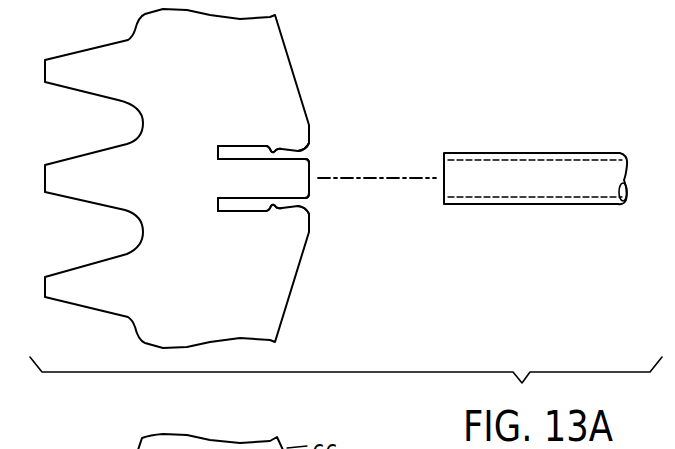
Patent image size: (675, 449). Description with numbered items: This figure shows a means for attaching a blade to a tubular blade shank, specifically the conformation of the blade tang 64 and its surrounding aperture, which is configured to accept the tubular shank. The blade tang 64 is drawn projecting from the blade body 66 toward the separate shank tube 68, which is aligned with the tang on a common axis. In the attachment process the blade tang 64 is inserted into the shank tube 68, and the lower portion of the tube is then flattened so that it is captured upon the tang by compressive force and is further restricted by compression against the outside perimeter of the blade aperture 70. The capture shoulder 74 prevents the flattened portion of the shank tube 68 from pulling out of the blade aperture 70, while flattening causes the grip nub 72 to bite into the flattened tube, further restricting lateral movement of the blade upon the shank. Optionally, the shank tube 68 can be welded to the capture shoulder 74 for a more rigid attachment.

The blade tang 64 is at (298, 174).
The hanger body 66 is at (272, 53).
The shank tube 68 is at (525, 170).
The blade aperture 70 is at (243, 146).
The grip nub 72 is at (272, 150).
The capture shoulder 74 is at (298, 143).